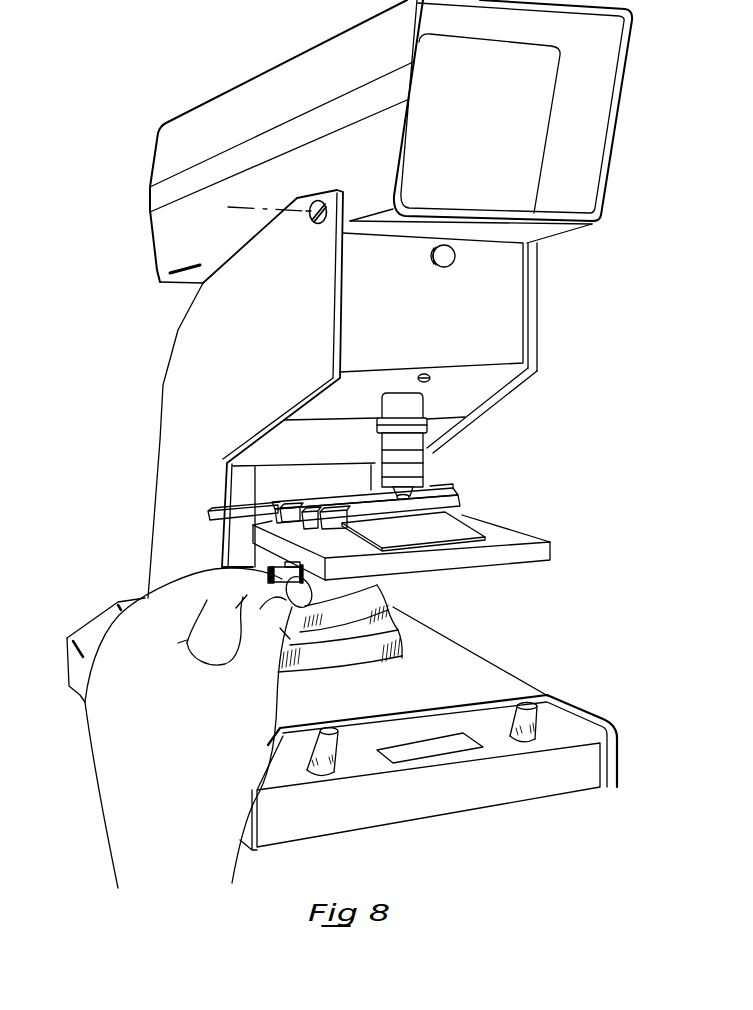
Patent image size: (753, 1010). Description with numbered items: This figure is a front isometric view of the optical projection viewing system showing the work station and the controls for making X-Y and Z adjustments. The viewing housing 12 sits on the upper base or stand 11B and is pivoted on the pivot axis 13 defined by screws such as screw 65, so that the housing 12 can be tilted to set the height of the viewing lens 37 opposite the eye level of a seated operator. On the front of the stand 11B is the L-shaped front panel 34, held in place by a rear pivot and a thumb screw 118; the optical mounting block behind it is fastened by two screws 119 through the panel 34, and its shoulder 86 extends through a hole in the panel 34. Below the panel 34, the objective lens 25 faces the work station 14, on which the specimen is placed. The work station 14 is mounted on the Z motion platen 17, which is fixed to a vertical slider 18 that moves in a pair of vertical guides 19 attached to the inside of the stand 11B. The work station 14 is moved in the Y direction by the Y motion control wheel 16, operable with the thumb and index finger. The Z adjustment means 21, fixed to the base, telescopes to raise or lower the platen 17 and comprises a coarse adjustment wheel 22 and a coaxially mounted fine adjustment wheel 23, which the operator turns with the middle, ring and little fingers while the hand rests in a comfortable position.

The viewing housing 12 is at (311, 181).
The pivot axis 13 is at (247, 210).
The viewing lens 37 is at (484, 131).
The screw 65 is at (313, 227).
The upper base 11B is at (264, 341).
The front panel 34 is at (472, 341).
The thumb screw 118 is at (455, 262).
The screws 119 is at (432, 379).
The shoulder 86 is at (443, 433).
The objective lens 25 is at (424, 458).
The vertical guides 19 is at (235, 487).
The vertical slider 18 is at (300, 500).
The Z motion platen 17 is at (553, 542).
The work station 14 is at (446, 520).
The Y motion control wheel 16 is at (260, 577).
The fine adjustment wheel 23 is at (392, 608).
The Z adjustment means 21 is at (411, 637).
The coarse adjustment wheel 22 is at (402, 662).